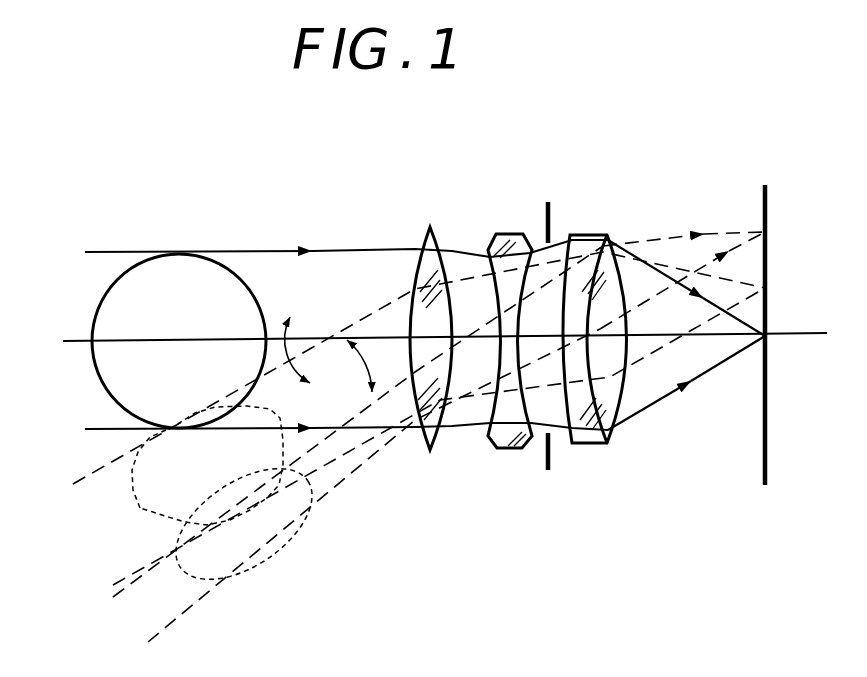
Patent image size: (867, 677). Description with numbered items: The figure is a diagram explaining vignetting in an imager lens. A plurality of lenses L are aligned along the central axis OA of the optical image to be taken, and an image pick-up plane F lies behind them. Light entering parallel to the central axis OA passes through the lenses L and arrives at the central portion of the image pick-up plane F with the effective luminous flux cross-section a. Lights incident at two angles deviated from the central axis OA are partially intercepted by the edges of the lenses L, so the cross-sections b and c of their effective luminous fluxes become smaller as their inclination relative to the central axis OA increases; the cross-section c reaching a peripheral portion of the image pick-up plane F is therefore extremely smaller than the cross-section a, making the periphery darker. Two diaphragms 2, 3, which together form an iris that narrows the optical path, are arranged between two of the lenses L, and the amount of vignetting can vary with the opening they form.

The cross-section of effective luminous flux a is at (97, 318).
The cross-section of effective luminous flux b is at (140, 506).
The cross-section of effective luminous flux c is at (183, 575).
The lenses L is at (428, 229).
The diaphragm 2 is at (551, 214).
The diaphragm 3 is at (550, 470).
The image pick-up plane F is at (763, 449).
The central axis OA is at (799, 336).